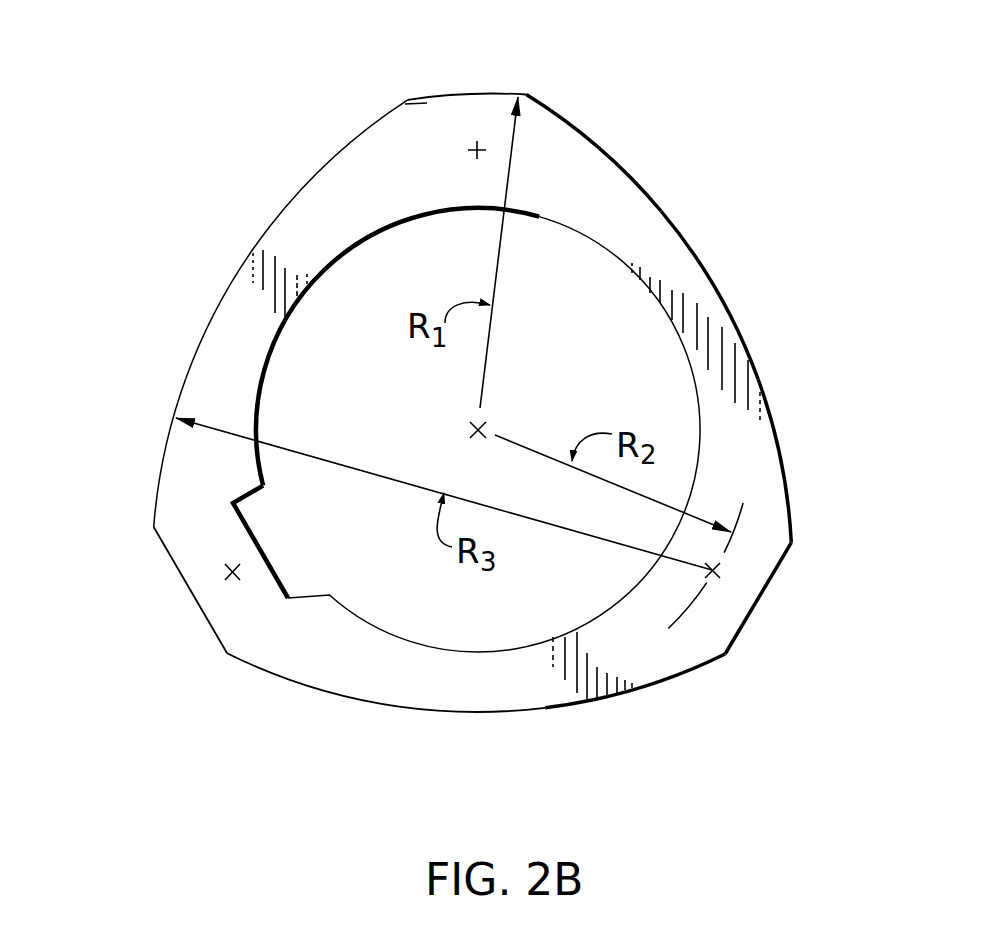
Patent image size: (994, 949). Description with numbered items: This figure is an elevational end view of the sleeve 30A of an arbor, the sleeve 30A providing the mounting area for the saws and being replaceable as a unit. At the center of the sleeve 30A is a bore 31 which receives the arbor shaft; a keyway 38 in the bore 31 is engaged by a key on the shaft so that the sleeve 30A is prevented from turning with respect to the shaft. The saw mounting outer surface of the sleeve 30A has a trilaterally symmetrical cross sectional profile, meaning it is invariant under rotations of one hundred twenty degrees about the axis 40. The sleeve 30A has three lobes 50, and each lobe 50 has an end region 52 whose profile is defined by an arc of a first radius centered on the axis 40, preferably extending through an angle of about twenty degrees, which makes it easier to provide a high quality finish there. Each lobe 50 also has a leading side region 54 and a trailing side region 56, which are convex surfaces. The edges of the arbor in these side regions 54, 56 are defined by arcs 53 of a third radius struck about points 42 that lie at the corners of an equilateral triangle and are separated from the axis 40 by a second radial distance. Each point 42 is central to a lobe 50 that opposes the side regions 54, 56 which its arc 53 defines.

The sleeve 30A is at (727, 170).
The bore 31 is at (443, 645).
The keyway 38 is at (298, 590).
The axis 40 is at (468, 429).
The points 42 is at (466, 152).
The lobes 50 is at (403, 102).
The end region 52 is at (415, 68).
The arcs 53 is at (717, 278).
The leading side region 54 is at (603, 142).
The trailing side region 56 is at (320, 167).